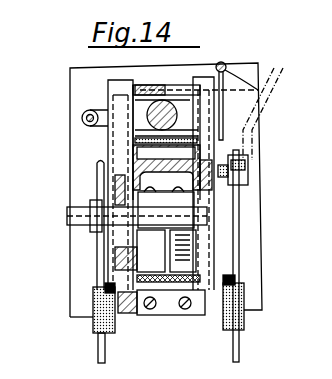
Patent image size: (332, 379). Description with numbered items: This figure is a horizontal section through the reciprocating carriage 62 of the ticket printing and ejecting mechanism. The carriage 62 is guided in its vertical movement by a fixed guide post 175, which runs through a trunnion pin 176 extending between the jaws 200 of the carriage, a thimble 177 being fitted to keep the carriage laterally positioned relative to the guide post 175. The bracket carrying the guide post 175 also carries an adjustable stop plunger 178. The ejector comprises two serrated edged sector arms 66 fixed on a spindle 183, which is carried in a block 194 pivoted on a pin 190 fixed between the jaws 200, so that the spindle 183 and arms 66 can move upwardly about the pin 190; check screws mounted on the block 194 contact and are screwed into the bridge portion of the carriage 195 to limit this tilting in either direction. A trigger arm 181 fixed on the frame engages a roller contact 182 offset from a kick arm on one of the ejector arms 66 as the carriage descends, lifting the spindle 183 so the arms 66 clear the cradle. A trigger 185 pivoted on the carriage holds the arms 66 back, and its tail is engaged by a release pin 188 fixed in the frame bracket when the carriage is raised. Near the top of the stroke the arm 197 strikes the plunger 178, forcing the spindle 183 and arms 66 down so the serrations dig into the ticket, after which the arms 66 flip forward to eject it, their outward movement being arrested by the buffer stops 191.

The reciprocating carriage 62 is at (54, 193).
The sector arms 66 is at (98, 347).
The fixed guide post 175 is at (149, 110).
The trunnion pin 176 is at (112, 95).
The thimble 177 is at (147, 88).
The adjustable stop plunger 178 is at (82, 118).
The trigger arm 181 is at (248, 148).
The roller contact 182 is at (248, 163).
The spindle 183 is at (67, 214).
The trigger 185 is at (256, 72).
The release pin 188 is at (225, 62).
The pin 190 is at (104, 283).
The buffer stops 191 is at (93, 308).
The block 194 is at (136, 250).
The bridge portion of the carriage 195 is at (96, 168).
The arm 197 is at (108, 147).
The jaws of the carriage 200 is at (114, 262).